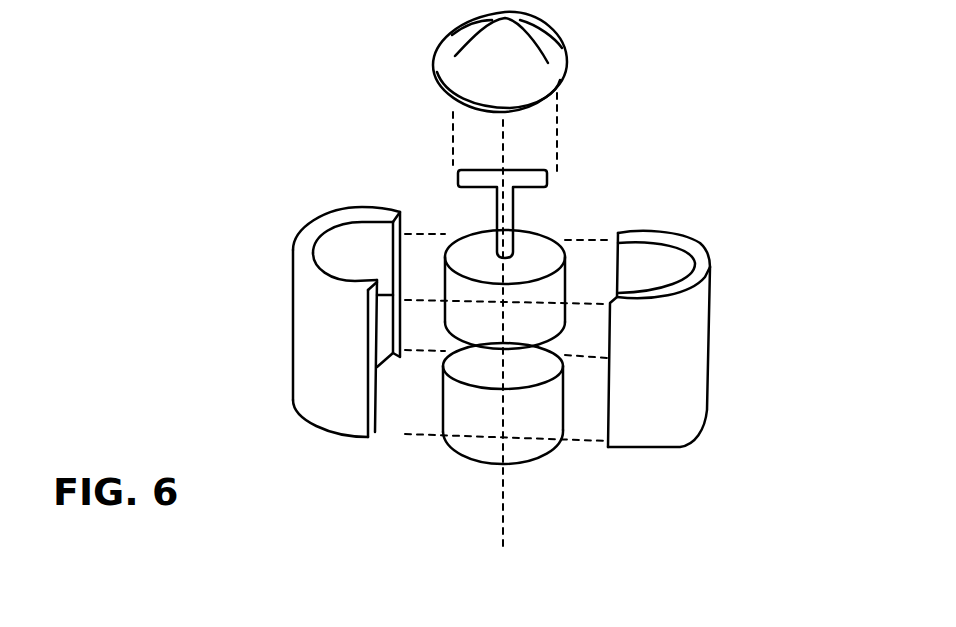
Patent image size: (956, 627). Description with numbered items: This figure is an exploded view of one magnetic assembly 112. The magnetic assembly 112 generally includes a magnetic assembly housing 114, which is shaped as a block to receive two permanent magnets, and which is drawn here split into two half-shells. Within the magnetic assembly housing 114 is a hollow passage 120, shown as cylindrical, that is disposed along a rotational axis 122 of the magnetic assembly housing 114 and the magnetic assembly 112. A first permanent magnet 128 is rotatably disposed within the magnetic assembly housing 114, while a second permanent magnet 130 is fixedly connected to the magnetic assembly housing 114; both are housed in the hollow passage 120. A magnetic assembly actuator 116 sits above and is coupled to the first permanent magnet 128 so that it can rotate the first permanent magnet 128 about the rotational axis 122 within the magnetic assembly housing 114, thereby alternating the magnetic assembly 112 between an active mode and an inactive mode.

The magnetic assembly 112 is at (284, 291).
The magnetic assembly housing 114 is at (715, 406).
The magnetic assembly actuator 116 is at (557, 43).
The hollow passage 120 is at (357, 246).
The rotational axis 122 is at (505, 468).
The first permanent magnet 128 is at (603, 63).
The second permanent magnet 130 is at (462, 456).